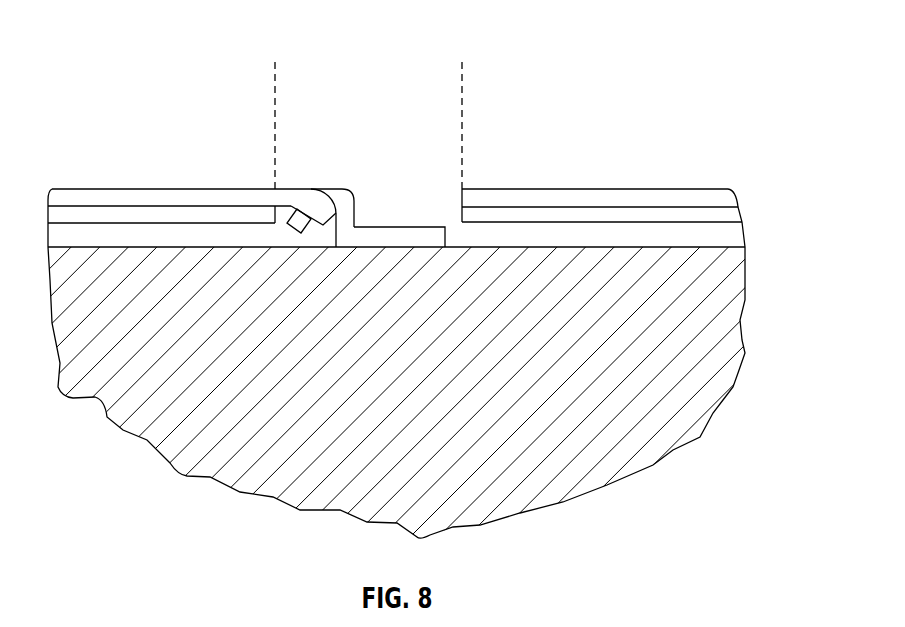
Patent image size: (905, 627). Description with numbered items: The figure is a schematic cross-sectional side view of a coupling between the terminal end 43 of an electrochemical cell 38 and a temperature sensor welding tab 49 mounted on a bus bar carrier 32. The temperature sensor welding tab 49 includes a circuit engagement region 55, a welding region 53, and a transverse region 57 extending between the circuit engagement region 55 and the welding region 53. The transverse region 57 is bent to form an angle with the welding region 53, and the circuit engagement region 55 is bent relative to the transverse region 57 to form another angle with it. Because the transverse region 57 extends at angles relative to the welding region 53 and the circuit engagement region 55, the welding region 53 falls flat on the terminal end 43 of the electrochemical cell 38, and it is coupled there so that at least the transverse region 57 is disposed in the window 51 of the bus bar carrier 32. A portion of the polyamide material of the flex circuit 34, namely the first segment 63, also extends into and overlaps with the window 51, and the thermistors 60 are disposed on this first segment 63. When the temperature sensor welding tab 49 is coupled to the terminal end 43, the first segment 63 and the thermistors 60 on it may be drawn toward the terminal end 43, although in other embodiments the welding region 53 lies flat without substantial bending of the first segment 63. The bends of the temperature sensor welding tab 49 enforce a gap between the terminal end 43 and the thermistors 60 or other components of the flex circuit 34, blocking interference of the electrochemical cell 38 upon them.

The bus bar carrier 32 is at (697, 215).
The flex circuit 34 is at (673, 189).
The electrochemical cell 38 is at (607, 443).
The terminal end 43 is at (107, 243).
The temperature sensor welding tab 49 is at (416, 200).
The window 51 is at (275, 62).
The welding region 53 is at (393, 238).
The circuit engagement region 55 is at (329, 189).
The transverse region 57 is at (351, 190).
The thermistors 60 is at (291, 238).
The first segment 63 is at (285, 196).